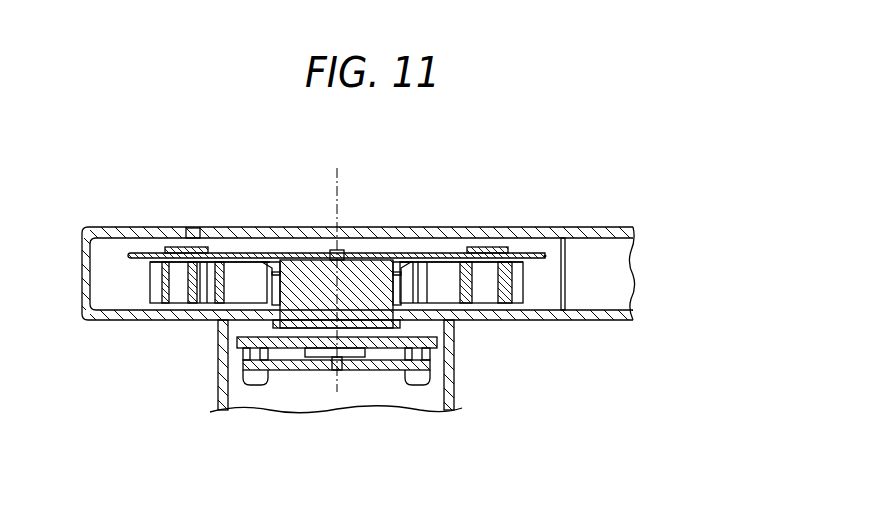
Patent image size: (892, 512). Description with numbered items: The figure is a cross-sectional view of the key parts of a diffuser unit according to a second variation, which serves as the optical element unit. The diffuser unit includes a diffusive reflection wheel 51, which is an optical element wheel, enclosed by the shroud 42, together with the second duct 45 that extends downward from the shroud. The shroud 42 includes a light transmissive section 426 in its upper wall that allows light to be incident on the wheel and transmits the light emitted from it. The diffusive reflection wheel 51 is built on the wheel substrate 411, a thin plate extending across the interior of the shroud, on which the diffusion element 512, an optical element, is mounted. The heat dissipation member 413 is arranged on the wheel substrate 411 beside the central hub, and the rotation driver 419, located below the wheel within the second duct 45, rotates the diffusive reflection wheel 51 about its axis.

The shroud 42 is at (393, 224).
The wheel substrate 411 is at (544, 252).
The heat dissipation member 413 is at (536, 289).
The rotation driver 419 is at (382, 328).
The light transmissive section 426 is at (192, 235).
The second duct 45 is at (455, 378).
The diffusive reflection wheel 51 is at (262, 246).
The diffusion element 512 is at (174, 246).